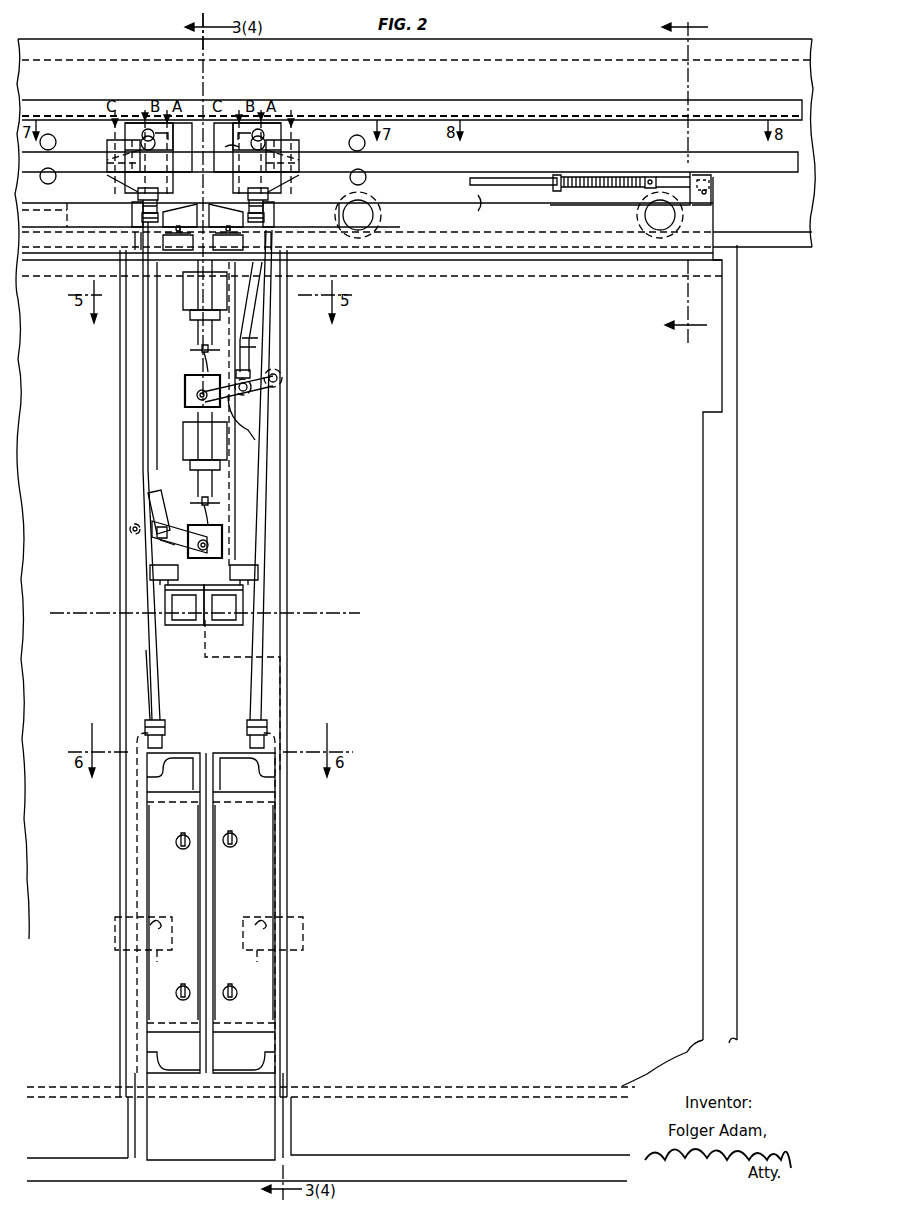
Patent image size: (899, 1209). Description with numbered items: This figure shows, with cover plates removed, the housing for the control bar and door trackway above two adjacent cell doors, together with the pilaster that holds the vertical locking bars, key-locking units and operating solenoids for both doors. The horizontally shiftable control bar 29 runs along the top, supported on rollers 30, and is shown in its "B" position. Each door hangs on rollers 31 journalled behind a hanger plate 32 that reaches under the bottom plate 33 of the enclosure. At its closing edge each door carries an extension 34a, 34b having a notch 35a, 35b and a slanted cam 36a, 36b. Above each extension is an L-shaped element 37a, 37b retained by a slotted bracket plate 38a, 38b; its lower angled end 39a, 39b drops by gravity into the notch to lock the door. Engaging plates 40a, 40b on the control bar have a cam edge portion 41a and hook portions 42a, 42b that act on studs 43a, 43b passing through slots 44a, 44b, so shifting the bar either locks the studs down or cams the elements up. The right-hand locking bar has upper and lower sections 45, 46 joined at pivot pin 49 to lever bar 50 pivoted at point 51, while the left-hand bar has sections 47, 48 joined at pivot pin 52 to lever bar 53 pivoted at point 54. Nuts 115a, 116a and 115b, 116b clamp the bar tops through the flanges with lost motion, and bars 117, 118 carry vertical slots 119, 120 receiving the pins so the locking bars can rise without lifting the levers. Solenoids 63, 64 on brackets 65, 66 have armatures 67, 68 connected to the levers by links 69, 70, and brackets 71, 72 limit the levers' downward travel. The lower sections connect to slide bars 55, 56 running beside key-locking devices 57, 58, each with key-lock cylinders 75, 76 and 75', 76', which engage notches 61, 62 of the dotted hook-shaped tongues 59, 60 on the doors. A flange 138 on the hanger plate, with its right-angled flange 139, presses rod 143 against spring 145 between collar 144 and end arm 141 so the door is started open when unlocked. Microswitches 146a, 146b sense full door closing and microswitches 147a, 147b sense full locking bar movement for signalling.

The control bar 29 is at (527, 160).
The rollers 30 is at (55, 140).
The rollers 31 is at (372, 210).
The hanger plate 32 is at (466, 197).
The bottom plate 33 is at (744, 246).
The extension 34a is at (327, 205).
The extension 34b is at (70, 215).
The notch 35a is at (266, 212).
The notch 35b is at (140, 212).
The cam 36a is at (225, 212).
The cam 36b is at (185, 212).
The L-shaped element 37a is at (299, 160).
The L-shaped element 37b is at (123, 156).
The bracket plate 38a is at (278, 130).
The bracket plate 38b is at (128, 130).
The lower angled end 39a is at (266, 205).
The lower angled end 39b is at (140, 205).
The engaging plate 40a is at (272, 158).
The engaging plate 40b is at (135, 152).
The cam edge portion 41a is at (221, 136).
The hook portion 42a is at (270, 136).
The hook portion 42b is at (165, 138).
The stud 43a is at (257, 173).
The stud 43b is at (138, 182).
The vertically extending slot 44a is at (250, 146).
The vertically extending slot 44b is at (147, 128).
The upper section of right-hand locking bar 45 is at (248, 328).
The lower section of right-hand locking bar 46 is at (252, 545).
The upper section of left-hand locking bar 47 is at (142, 372).
The lower section of left-hand locking bar 48 is at (152, 650).
The pivot pin 49 is at (252, 397).
The lever bar 50 is at (235, 405).
The pivot point 51 is at (280, 377).
The pivot pin 52 is at (165, 535).
The lever bar 53 is at (172, 545).
The pivot point 54 is at (130, 532).
The vertical slide bar 55 is at (278, 798).
The vertical slide bar 56 is at (135, 816).
The key-locking device 57 is at (244, 912).
The key-locking device 58 is at (173, 912).
The hook-shaped tongue 59 is at (273, 949).
The hook-shaped tongue 60 is at (143, 949).
The notch 61 is at (264, 919).
The notch 62 is at (152, 921).
The solenoid 63 is at (186, 300).
The solenoid 64 is at (185, 445).
The bracket 65 is at (192, 316).
The bracket 66 is at (192, 466).
The armature 67 is at (200, 335).
The armature 68 is at (200, 485).
The link 69 is at (205, 362).
The link 70 is at (206, 514).
The bracket 71 is at (188, 405).
The bracket 72 is at (225, 552).
The key-lock cylinder 75 is at (244, 1002).
The key-lock cylinder 75' is at (171, 1002).
The key-lock cylinder 76 is at (244, 834).
The key-lock cylinder 76' is at (169, 835).
The nut 115a is at (247, 197).
The nut 115b is at (160, 197).
The nut 116a is at (248, 218).
The nut 116b is at (158, 218).
The bar 117 is at (250, 372).
The bar 118 is at (155, 512).
The vertical slot 119 is at (285, 393).
The vertical slot 120 is at (142, 526).
The flange 138 is at (705, 200).
The right-angled flange 139 is at (708, 194).
The end arm 141 is at (556, 192).
The rod 143 is at (503, 186).
The collar 144 is at (650, 176).
The spring 145 is at (588, 188).
The microswitch 146a is at (228, 244).
The microswitch 146b is at (178, 244).
The microswitch 147a is at (232, 597).
The microswitch 147b is at (178, 600).